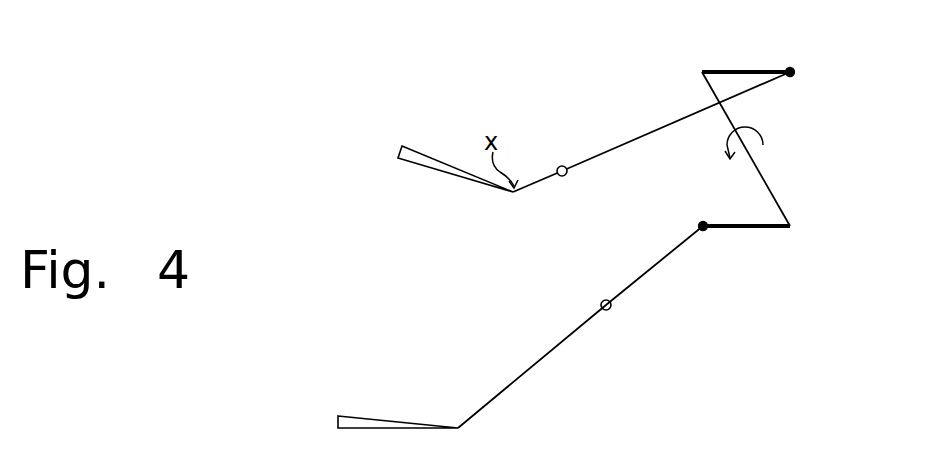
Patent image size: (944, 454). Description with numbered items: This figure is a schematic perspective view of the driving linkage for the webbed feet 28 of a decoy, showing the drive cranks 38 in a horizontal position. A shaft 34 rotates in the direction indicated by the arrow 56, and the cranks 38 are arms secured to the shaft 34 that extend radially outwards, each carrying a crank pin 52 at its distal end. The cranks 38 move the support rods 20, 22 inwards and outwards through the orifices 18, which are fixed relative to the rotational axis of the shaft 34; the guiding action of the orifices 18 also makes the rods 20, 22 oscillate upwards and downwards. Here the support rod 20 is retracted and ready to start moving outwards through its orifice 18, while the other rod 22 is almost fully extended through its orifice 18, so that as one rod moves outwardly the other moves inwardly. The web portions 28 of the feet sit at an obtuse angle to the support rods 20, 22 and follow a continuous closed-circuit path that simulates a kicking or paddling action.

The orifices 18 is at (559, 165).
The support rod 20 is at (673, 123).
The support rod 22 is at (500, 395).
The webbed feet 28 is at (447, 168).
The shaft 34 is at (773, 187).
The cranks 38 is at (750, 72).
The crank pin 52 is at (798, 72).
The arrow 56 is at (727, 142).